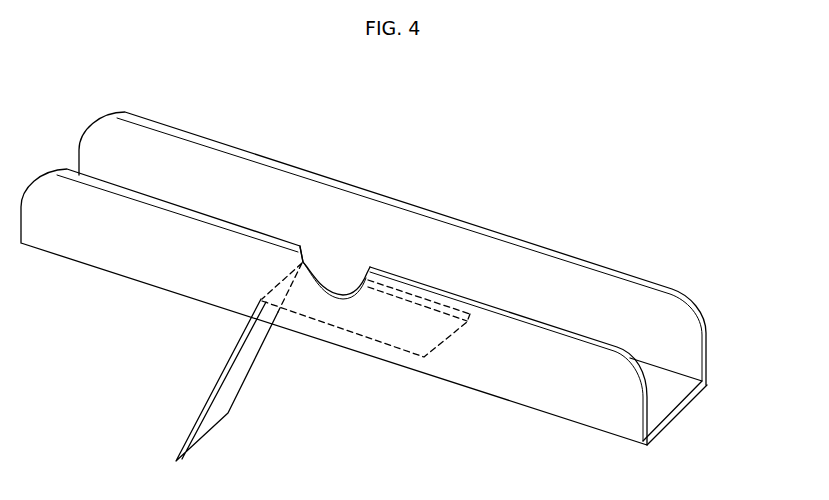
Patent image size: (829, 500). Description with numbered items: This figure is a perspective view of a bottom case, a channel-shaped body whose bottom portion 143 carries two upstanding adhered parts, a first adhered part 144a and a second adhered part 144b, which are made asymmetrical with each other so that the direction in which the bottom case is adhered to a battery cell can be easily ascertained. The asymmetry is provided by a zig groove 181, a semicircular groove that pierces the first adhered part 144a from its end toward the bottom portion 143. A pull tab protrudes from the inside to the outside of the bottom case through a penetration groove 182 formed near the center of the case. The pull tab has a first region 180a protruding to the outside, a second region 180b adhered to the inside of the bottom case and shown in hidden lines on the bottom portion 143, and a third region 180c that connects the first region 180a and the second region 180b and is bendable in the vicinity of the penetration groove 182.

The bottom portion 143 is at (678, 408).
The first adhered part 144a is at (559, 400).
The second adhered part 144b is at (528, 257).
The zig groove 181 is at (313, 257).
The penetration groove 182 is at (272, 290).
The first region 180a is at (232, 402).
The second region 180b is at (378, 330).
The third region 180c is at (260, 300).